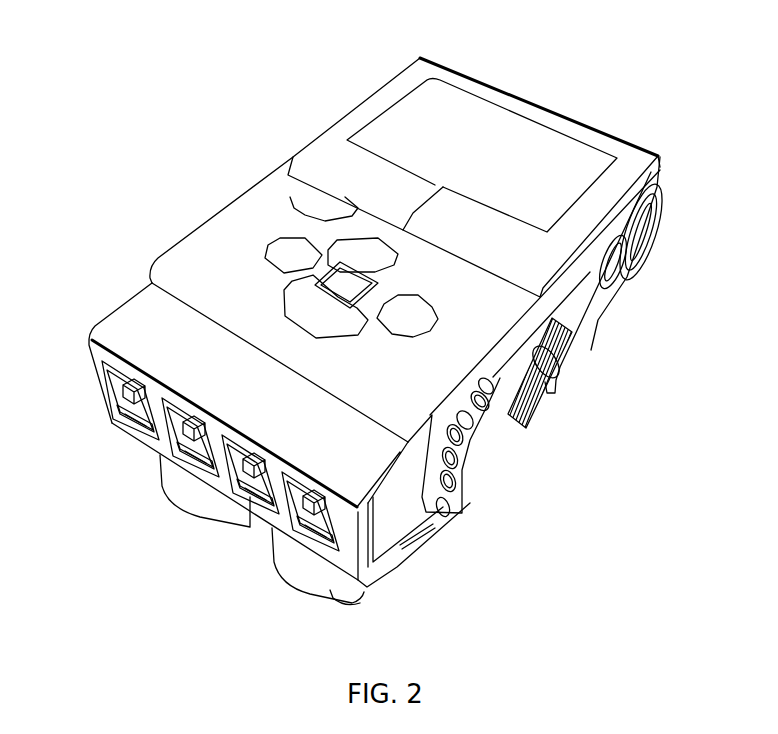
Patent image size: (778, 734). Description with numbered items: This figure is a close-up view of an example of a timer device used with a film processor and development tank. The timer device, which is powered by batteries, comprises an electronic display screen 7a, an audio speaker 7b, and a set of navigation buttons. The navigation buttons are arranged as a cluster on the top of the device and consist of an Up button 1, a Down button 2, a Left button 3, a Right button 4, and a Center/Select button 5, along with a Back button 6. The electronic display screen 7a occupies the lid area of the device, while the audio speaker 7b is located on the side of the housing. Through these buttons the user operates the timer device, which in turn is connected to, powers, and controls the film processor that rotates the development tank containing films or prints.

The Up navigation button 1 is at (387, 257).
The Down navigation button 2 is at (314, 320).
The Left navigation button 3 is at (287, 258).
The Right navigation button 4 is at (422, 320).
The Center/Select navigation button 5 is at (352, 287).
The Back button 6 is at (305, 198).
The electronic display screen 7a is at (558, 183).
The audio speaker 7b is at (528, 395).